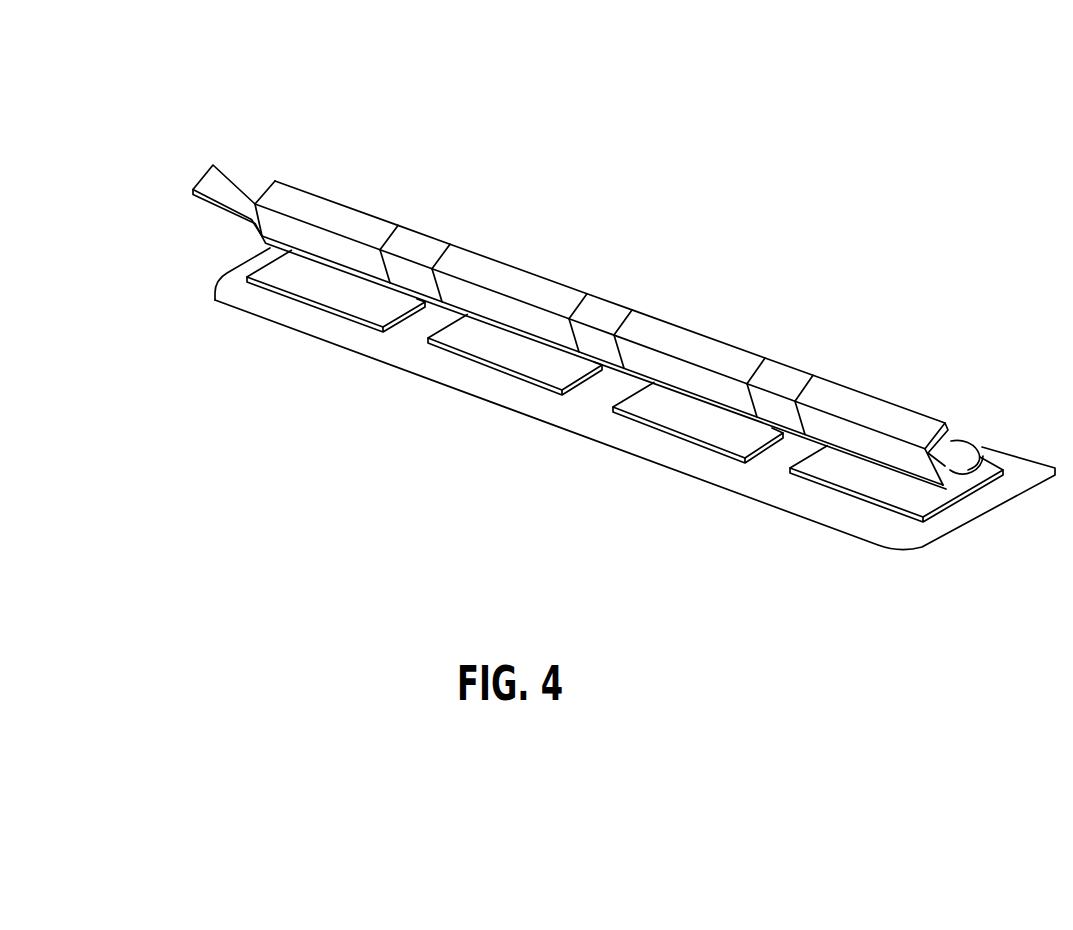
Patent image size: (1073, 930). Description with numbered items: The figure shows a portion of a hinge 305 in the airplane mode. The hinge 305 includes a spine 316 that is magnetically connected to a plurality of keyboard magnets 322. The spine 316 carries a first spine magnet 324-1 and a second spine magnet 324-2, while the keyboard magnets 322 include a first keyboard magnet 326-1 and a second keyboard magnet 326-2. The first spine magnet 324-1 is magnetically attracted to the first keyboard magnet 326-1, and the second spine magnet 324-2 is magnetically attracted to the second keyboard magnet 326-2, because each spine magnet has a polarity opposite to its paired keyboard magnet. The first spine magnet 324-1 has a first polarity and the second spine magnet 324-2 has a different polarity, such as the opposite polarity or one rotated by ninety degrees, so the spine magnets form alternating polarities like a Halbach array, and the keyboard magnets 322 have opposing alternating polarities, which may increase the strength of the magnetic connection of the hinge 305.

The hinge 305 is at (815, 110).
The spine 316 is at (205, 88).
The keyboard magnets 322 is at (200, 307).
The first spine magnet 324-1 is at (338, 221).
The second spine magnet 324-2 is at (512, 285).
The first keyboard magnet 326-1 is at (302, 283).
The second keyboard magnet 326-2 is at (470, 340).